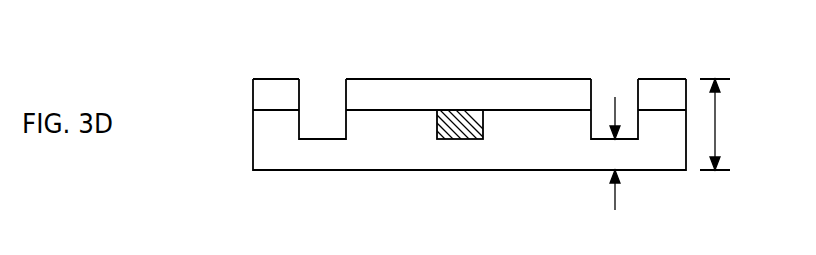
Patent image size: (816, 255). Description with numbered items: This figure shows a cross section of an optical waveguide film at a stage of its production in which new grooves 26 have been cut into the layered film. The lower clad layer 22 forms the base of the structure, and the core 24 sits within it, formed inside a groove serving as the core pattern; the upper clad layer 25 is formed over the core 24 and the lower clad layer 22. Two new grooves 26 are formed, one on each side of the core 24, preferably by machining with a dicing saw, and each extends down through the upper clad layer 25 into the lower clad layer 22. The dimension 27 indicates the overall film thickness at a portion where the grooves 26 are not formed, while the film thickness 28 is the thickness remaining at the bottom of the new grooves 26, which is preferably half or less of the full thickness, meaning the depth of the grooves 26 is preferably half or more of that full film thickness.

The lower clad layer 22 is at (272, 163).
The core 24 is at (458, 113).
The upper clad layer 25 is at (385, 91).
The new grooves 26 is at (323, 91).
The total thickness 27 is at (715, 133).
The film thickness 28 is at (615, 197).